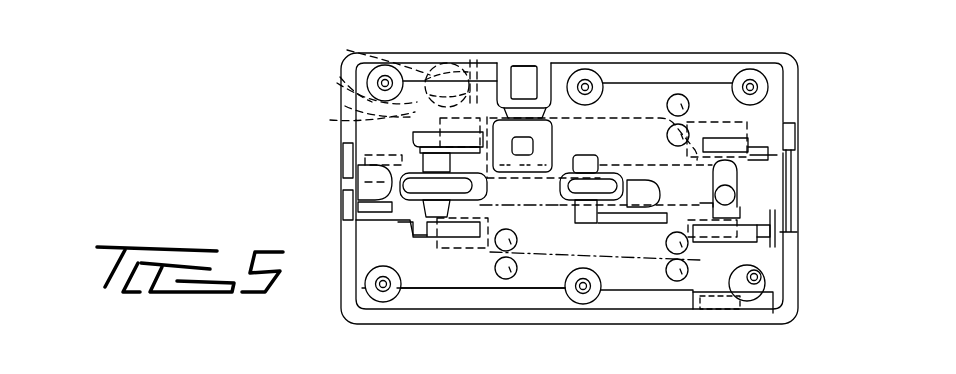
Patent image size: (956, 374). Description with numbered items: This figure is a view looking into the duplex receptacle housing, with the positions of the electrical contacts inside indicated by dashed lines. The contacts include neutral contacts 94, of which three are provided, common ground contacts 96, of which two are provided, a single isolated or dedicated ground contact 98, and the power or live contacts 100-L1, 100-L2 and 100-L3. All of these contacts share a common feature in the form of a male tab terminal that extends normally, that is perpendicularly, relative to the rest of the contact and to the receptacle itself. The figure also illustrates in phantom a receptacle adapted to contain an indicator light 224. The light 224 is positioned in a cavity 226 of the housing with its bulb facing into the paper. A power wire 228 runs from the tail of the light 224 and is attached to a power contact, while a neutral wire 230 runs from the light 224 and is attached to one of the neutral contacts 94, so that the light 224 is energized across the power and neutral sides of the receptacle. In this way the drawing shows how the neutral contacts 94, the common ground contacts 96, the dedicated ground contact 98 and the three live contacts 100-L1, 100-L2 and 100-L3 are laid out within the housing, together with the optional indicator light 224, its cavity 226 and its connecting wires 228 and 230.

The neutral contact 94 is at (617, 262).
The common ground contact 96 is at (700, 203).
The isolated ground contact 98 is at (743, 310).
The power contact 100-L1 is at (510, 162).
The power contact 100-L2 is at (512, 118).
The power contact 100-L3 is at (533, 67).
The indicator light 224 is at (430, 72).
The cavity 226 is at (340, 77).
The power wire 228 is at (347, 50).
The neutral wire 230 is at (345, 106).